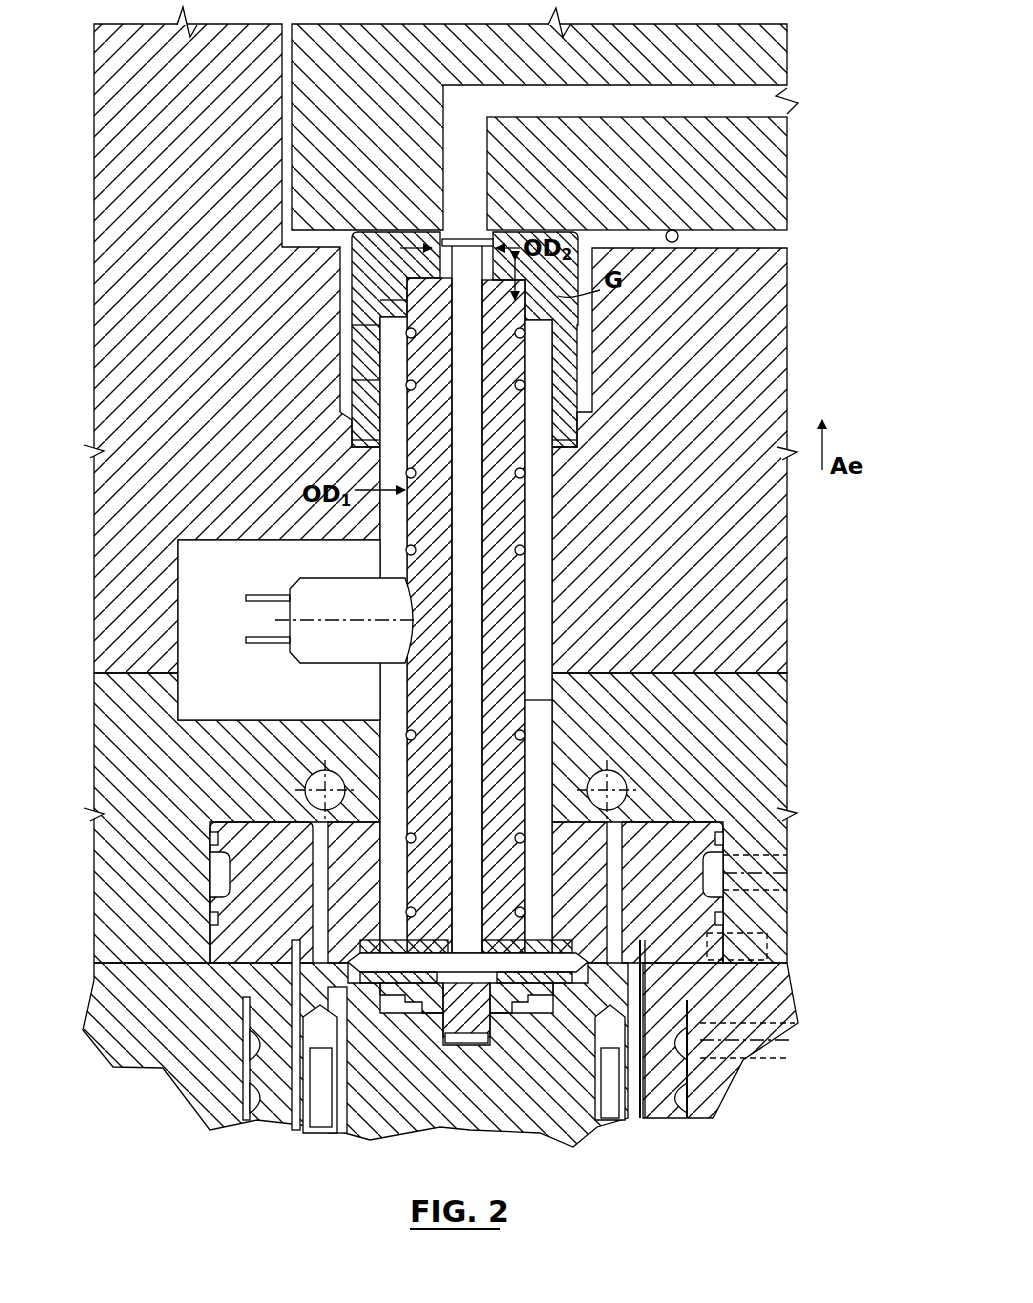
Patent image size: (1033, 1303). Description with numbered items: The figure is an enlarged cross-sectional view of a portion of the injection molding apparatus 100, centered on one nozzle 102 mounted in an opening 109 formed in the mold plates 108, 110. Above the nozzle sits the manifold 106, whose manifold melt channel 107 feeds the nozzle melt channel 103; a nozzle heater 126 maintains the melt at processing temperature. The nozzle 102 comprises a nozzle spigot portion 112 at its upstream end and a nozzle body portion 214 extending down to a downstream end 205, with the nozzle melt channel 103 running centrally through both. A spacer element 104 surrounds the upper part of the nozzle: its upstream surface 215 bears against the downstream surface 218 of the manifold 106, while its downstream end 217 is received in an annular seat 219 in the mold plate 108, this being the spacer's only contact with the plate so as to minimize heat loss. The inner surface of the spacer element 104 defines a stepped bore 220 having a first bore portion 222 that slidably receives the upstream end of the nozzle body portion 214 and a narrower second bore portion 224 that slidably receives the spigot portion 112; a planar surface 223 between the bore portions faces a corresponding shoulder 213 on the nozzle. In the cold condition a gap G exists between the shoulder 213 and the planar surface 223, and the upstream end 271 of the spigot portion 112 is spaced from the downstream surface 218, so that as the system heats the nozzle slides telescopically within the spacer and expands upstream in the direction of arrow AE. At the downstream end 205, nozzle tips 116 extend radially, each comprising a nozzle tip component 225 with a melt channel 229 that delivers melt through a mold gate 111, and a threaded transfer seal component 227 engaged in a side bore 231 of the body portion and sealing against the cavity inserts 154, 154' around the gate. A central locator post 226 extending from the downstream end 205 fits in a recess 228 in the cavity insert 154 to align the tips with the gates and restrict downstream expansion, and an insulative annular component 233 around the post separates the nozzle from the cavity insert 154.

The injection molding apparatus 100 is at (810, 106).
The nozzle 102 is at (583, 630).
The nozzle melt channel 103 is at (470, 510).
The spacer element 104 is at (603, 352).
The manifold 106 is at (385, 117).
The manifold melt channel 107 is at (627, 115).
The mold plate 108 is at (176, 450).
The opening 109 is at (553, 700).
The mold plate 110 is at (207, 757).
The mold gate 111 is at (352, 960).
The nozzle spigot portion 112 is at (500, 230).
The nozzle tip 116 is at (565, 945).
The nozzle heater 126 is at (525, 836).
The cavity insert 154 is at (746, 1029).
The cavity insert 154' is at (261, 852).
The downstream end 205 is at (595, 1088).
The shoulder 213 is at (413, 272).
The nozzle body portion 214 is at (532, 585).
The upstream surface 215 is at (520, 255).
The downstream end 217 is at (580, 441).
The downstream surface 218 is at (672, 230).
The annular seat 219 is at (356, 442).
The stepped bore 220 is at (392, 380).
The first bore portion 222 is at (395, 320).
The planar surface 223 is at (417, 302).
The second bore portion 224 is at (404, 246).
The nozzle tip component 225 is at (395, 1000).
The central locator post 226 is at (468, 1043).
The transfer seal component 227 is at (362, 946).
The recess 228 is at (470, 1048).
The melt channel 229 is at (522, 990).
The side bore 231 is at (405, 936).
The insulative annular component 233 is at (430, 1055).
The upstream end 271 is at (466, 238).